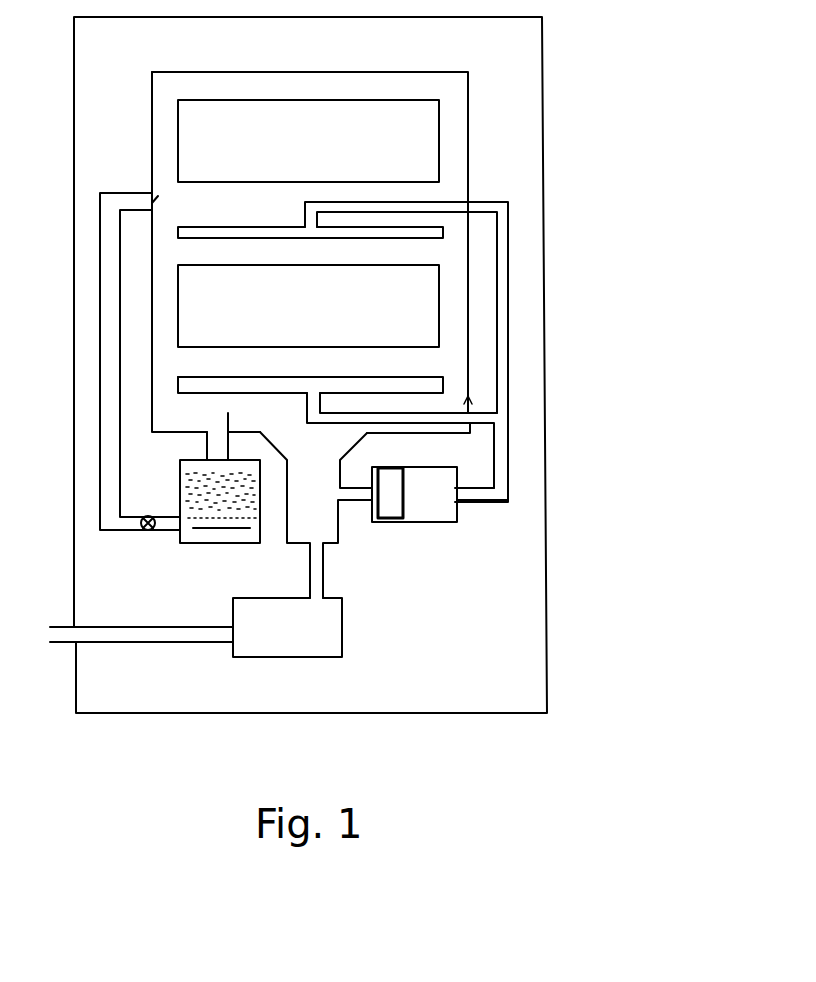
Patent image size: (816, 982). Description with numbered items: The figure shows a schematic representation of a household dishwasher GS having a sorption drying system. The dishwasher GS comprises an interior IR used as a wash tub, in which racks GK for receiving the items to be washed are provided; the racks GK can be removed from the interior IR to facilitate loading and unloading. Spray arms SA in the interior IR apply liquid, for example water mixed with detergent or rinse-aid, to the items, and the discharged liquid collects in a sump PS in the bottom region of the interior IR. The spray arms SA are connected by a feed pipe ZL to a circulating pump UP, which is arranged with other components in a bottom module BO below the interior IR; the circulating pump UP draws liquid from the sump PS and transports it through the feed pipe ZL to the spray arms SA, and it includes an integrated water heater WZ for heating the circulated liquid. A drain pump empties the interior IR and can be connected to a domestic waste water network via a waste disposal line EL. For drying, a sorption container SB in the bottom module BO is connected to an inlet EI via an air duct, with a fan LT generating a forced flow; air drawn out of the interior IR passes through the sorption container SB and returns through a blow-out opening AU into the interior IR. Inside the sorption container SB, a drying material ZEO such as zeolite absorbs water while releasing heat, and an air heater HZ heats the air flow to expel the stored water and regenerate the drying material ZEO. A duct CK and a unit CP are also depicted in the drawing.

The dishwasher GS is at (547, 192).
The interior IR is at (468, 95).
The racks GK is at (310, 154).
The spray arms SA is at (190, 223).
The feed pipe ZL is at (500, 200).
The cooling channel CK is at (100, 190).
The inlet EI is at (166, 191).
The blow-out opening AU is at (228, 413).
The sorption container SB is at (220, 545).
The drying material ZEO is at (177, 492).
The air heater HZ is at (240, 535).
The fan LT is at (147, 532).
The sump PS is at (347, 528).
The circulating pump UP is at (423, 522).
The water heater WZ is at (380, 468).
The control unit CP is at (342, 622).
The waste disposal line EL is at (125, 645).
The bottom module BO is at (580, 480).